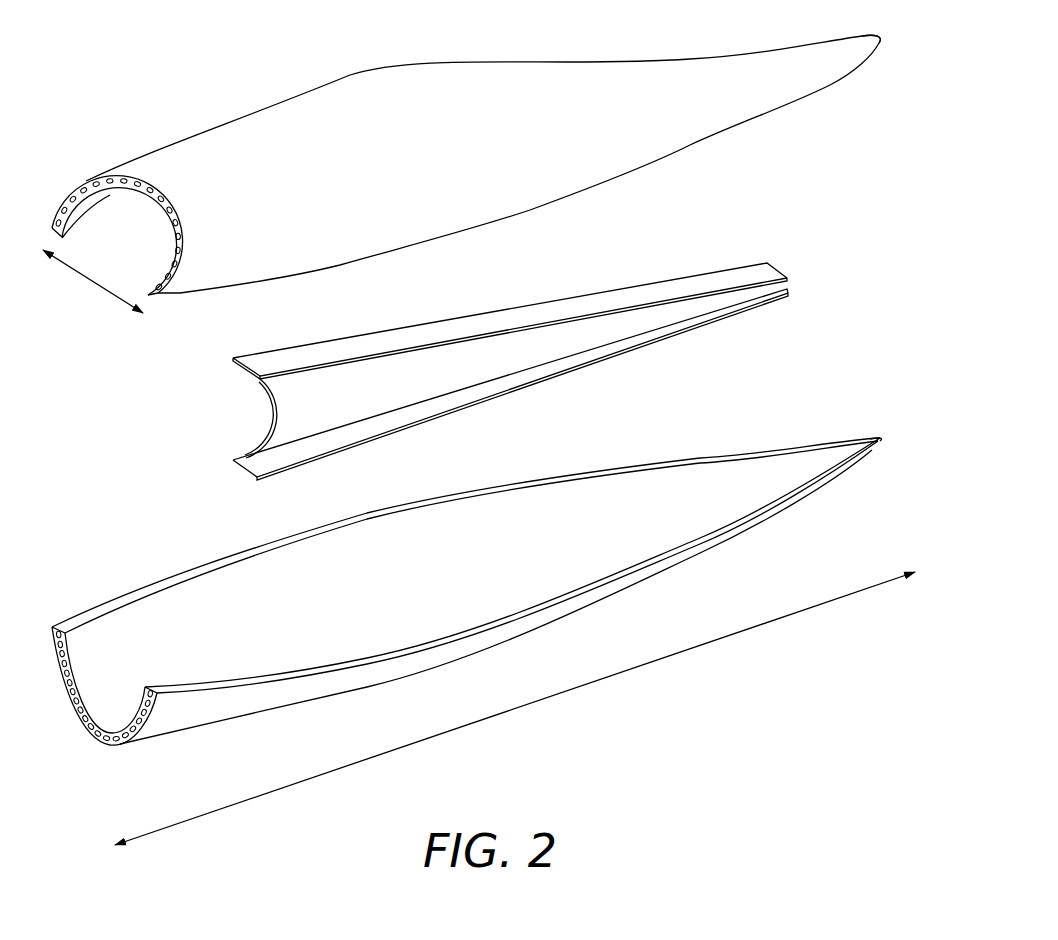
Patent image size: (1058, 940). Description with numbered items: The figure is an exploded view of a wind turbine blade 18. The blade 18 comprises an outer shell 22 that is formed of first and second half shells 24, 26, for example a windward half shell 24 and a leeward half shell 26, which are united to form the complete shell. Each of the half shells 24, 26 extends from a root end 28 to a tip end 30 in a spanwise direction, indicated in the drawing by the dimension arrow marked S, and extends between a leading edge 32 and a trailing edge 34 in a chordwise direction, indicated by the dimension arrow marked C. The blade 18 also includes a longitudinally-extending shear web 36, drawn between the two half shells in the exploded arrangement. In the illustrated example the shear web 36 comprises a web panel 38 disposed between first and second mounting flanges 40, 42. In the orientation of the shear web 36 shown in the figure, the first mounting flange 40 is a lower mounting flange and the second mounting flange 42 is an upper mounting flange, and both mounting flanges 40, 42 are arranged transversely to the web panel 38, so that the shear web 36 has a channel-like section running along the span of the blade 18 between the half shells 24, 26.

The wind turbine blade 18 is at (201, 58).
The outer shell 22 is at (823, 96).
The first half shell 24 is at (440, 656).
The second half shell 26 is at (392, 72).
The root end 28 is at (78, 184).
The tip end 30 is at (880, 39).
The leading edge 32 is at (533, 211).
The trailing edge 34 is at (110, 198).
The shear web 36 is at (228, 419).
The web panel 38 is at (310, 388).
The first mounting flange 40 is at (603, 358).
The second mounting flange 42 is at (465, 311).